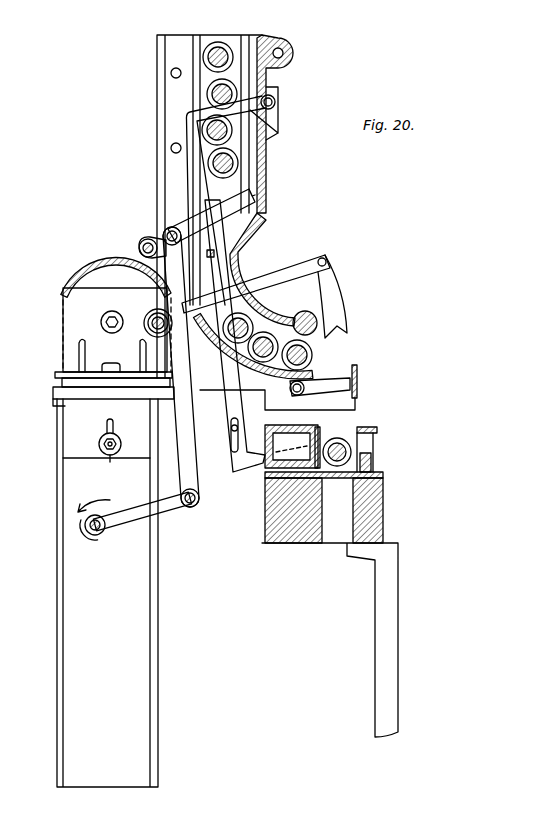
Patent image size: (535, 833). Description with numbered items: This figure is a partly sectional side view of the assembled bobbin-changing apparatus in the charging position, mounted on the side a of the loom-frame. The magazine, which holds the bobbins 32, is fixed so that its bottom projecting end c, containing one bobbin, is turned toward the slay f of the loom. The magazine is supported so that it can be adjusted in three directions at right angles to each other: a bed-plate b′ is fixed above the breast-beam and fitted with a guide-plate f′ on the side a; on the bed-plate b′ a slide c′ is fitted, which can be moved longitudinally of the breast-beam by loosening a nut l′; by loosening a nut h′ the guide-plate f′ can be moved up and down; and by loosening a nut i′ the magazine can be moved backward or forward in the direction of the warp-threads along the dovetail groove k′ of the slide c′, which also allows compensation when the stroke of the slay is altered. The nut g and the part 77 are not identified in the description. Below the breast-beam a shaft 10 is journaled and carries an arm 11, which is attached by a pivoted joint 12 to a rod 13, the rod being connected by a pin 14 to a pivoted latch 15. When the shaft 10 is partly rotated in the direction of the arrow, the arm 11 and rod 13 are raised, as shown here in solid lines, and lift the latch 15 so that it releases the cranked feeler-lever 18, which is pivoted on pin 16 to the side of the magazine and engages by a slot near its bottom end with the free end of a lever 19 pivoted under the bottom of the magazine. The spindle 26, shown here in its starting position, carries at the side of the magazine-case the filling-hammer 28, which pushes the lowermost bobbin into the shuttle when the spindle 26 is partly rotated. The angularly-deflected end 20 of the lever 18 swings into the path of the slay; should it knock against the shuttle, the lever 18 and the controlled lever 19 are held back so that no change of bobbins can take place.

The bobbins 32 is at (218, 55).
The guide bar with hook 77 is at (254, 46).
The pin 16 is at (276, 103).
The cranked feeler-lever 18 is at (262, 114).
The lever 19 is at (233, 437).
The pivoted latch 15 is at (232, 212).
The rod 13 is at (214, 418).
The pin 14 is at (143, 244).
The filling-hammer 28 is at (340, 297).
The dovetail groove k′ is at (86, 300).
The nut i′ is at (101, 322).
The spindle 26 is at (152, 318).
The nut l′ is at (85, 372).
The slide c′ is at (60, 383).
The bed-plate b′ is at (56, 405).
The guide-plate f′ is at (80, 437).
The bolt g is at (116, 426).
The nut h′ is at (110, 458).
The side a is at (60, 496).
The arm 11 is at (143, 526).
The shaft 10 is at (92, 527).
The pivoted joint 12 is at (199, 498).
The bottom projecting end c is at (358, 388).
The angularly-deflected end 20 is at (324, 436).
The slay f is at (286, 530).